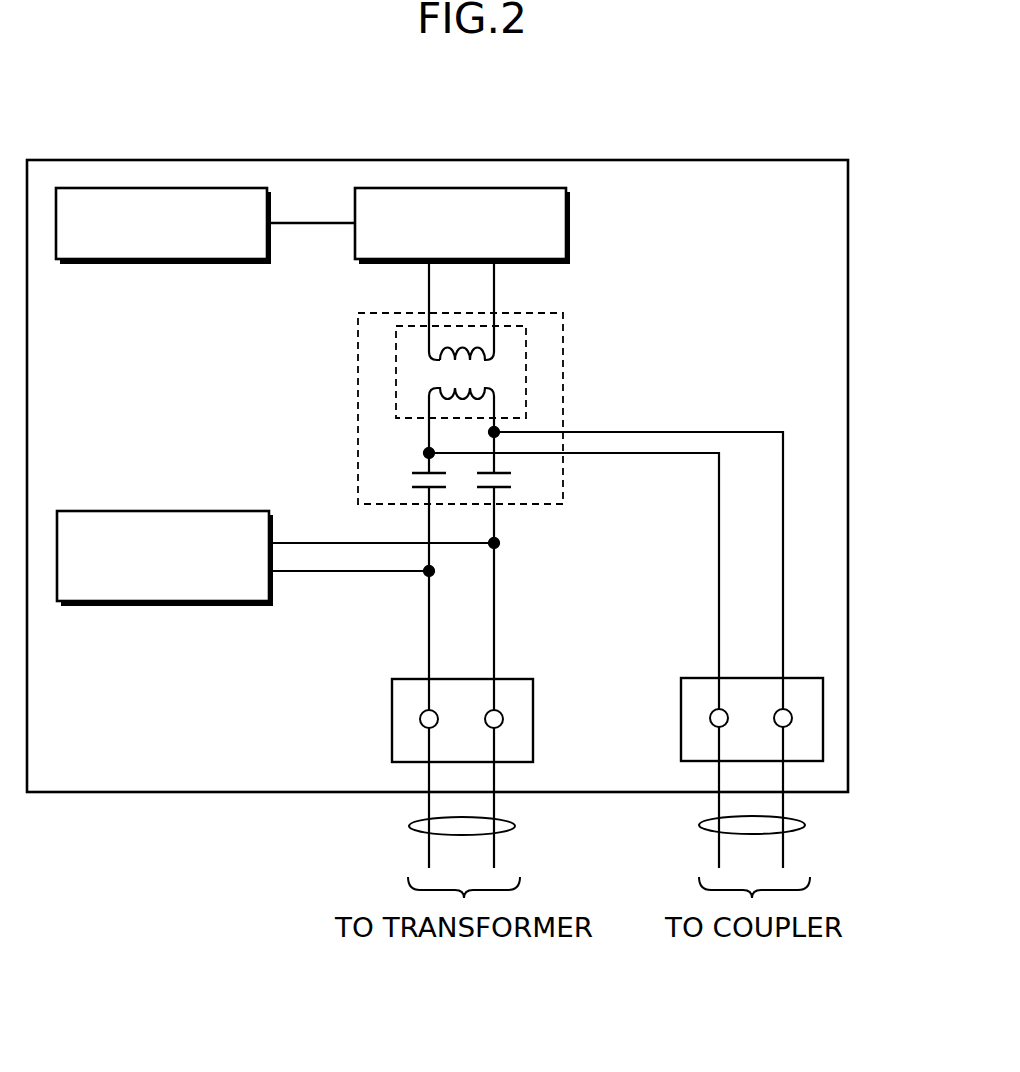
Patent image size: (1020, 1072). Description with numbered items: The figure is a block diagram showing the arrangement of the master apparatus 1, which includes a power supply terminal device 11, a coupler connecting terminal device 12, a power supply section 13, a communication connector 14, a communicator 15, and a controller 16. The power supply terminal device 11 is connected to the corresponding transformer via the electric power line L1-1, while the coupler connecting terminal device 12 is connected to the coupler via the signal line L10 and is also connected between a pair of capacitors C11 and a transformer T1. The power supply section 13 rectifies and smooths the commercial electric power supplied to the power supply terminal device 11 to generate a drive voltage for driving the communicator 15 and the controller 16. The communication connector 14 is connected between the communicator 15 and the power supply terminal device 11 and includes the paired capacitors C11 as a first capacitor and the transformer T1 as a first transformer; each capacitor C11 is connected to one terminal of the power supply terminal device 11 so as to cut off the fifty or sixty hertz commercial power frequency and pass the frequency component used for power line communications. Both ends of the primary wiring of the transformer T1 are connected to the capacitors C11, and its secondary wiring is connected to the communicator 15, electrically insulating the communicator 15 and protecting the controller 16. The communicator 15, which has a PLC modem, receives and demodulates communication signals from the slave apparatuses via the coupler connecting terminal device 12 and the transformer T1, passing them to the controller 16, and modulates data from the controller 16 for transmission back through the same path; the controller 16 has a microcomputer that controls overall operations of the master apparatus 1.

The master apparatus 1 is at (668, 160).
The controller 16 is at (203, 188).
The communicator 15 is at (569, 218).
The communication connector 14 is at (564, 323).
The transformer T1 is at (527, 380).
The capacitor C11 is at (438, 490).
The power supply section 13 is at (204, 511).
The power supply terminal device 11 is at (534, 716).
The coupler connecting terminal device 12 is at (824, 716).
The electric power line L1-1 is at (516, 827).
The signal line L10 is at (806, 826).